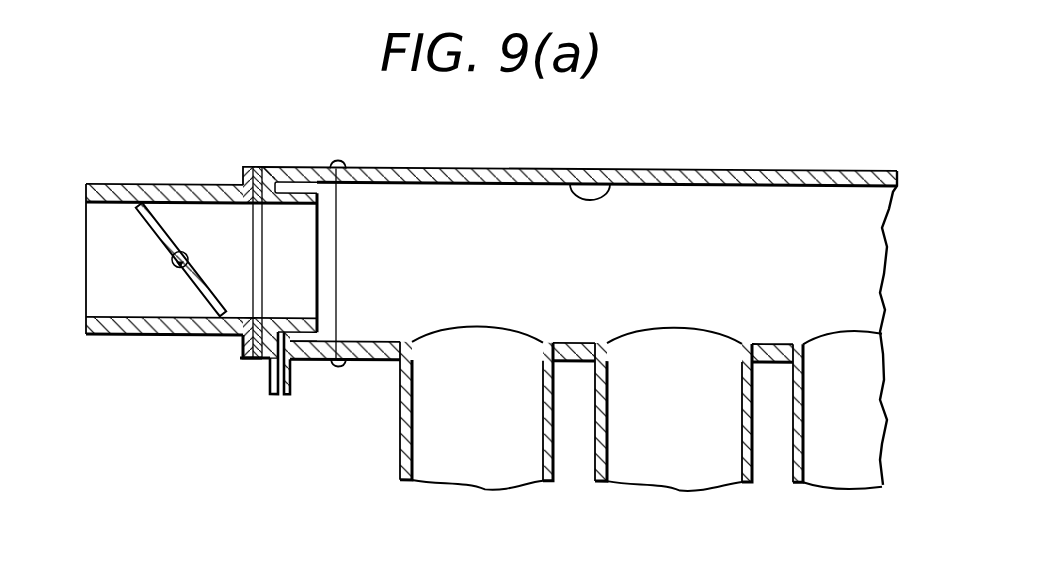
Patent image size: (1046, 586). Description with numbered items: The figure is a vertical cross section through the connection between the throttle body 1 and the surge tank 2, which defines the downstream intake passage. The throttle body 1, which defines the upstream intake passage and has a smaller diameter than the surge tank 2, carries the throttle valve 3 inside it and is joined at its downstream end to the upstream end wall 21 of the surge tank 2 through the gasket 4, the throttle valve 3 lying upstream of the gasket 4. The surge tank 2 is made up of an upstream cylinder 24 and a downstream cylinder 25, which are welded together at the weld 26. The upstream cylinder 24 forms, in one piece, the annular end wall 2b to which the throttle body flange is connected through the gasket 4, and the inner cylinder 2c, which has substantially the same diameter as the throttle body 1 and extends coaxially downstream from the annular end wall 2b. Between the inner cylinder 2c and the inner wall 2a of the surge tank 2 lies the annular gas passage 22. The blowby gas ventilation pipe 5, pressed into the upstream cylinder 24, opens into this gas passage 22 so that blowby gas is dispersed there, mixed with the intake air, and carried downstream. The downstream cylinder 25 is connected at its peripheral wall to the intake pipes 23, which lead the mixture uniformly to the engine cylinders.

The throttle body 1 is at (141, 185).
The surge tank 2 is at (532, 319).
The inner wall of the surge tank 2a is at (611, 186).
The annular end wall 2b is at (299, 186).
The inner cylinder 2c is at (320, 323).
The throttle valve 3 is at (197, 277).
The gasket 4 is at (252, 167).
The blowby gas ventilation pipe 5 is at (270, 390).
The upstream end wall 21 is at (265, 363).
The annular gas passage 22 is at (304, 333).
The intake pipes 23 is at (553, 447).
The upstream cylinder 24 is at (278, 167).
The downstream cylinder 25 is at (509, 168).
The weld 26 is at (345, 162).